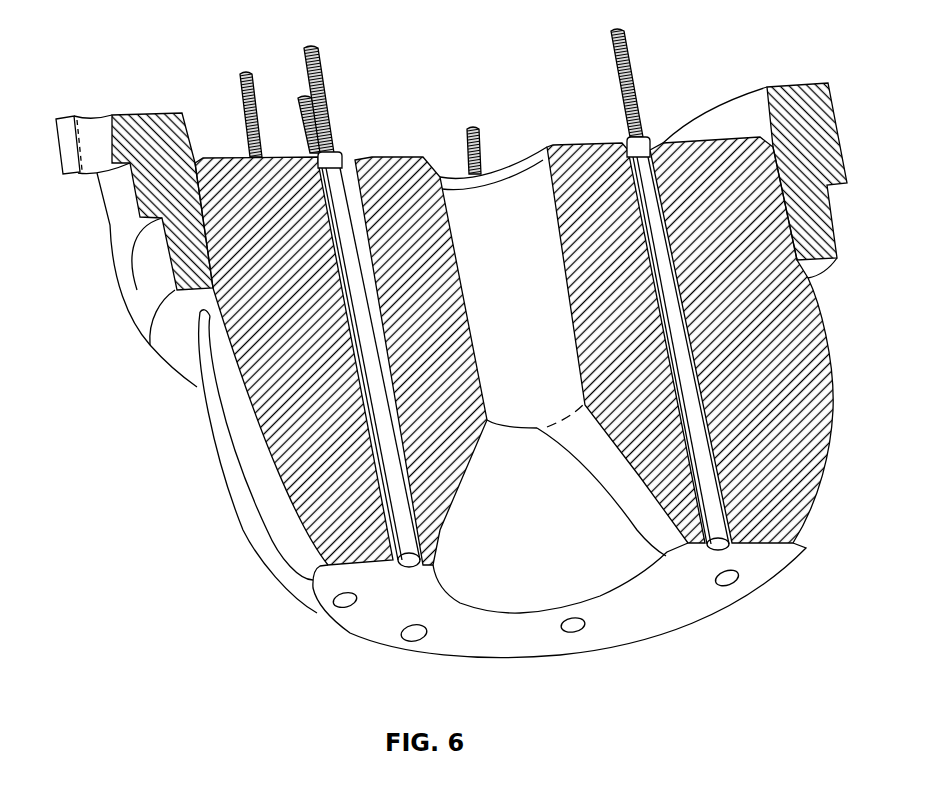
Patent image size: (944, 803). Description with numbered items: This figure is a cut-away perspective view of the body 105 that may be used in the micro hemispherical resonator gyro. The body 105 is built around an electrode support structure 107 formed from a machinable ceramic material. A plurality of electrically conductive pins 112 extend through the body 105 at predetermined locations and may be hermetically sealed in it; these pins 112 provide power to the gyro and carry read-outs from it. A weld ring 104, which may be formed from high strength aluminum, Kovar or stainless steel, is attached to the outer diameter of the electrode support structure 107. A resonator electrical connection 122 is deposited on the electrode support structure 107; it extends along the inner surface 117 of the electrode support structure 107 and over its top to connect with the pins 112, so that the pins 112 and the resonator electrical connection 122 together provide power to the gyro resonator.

The weld ring 104 is at (108, 228).
The body 105 is at (250, 565).
The electrode support structure 107 is at (222, 480).
The electrically conductive pins 112 is at (322, 68).
The inner surface 117 is at (585, 574).
The resonator electrical connection 122 is at (587, 471).